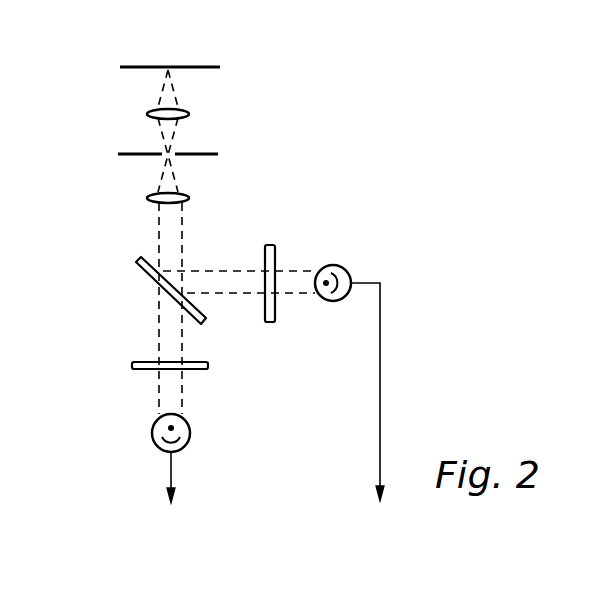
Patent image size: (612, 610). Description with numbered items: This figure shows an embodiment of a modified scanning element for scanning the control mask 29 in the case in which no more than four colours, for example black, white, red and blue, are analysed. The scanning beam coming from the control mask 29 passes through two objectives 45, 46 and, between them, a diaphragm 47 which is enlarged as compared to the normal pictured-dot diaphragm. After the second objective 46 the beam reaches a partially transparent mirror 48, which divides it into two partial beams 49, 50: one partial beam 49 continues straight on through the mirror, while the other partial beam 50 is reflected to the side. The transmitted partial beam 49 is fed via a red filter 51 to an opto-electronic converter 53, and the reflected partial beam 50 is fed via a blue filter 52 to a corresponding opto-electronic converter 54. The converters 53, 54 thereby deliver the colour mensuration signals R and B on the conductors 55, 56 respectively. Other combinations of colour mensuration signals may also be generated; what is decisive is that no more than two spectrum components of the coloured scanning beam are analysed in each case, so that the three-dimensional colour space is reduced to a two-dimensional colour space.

The control mask 29 is at (188, 63).
The objective 45 is at (178, 113).
The diaphragm 47 is at (198, 154).
The objective 46 is at (178, 197).
The partially transparent mirror 48 is at (145, 272).
The partial beam 49 is at (167, 327).
The partial beam 50 is at (208, 282).
The red filter 51 is at (195, 362).
The blue filter 52 is at (272, 316).
The opto-electronic converter 53 is at (188, 422).
The opto-electronic converter 54 is at (330, 265).
The conductor 55 is at (170, 470).
The conductor 56 is at (379, 372).